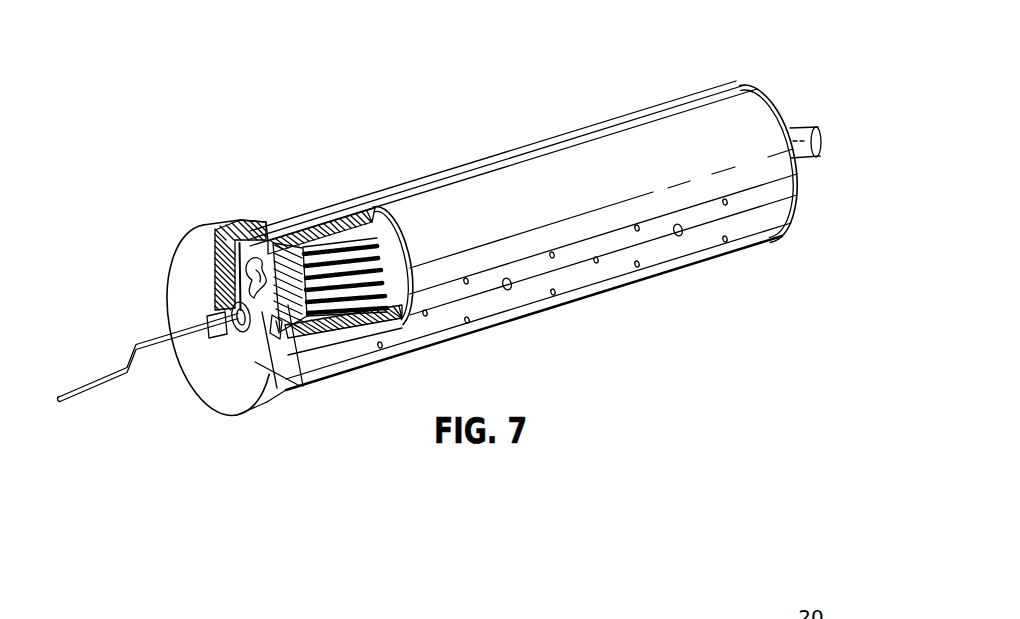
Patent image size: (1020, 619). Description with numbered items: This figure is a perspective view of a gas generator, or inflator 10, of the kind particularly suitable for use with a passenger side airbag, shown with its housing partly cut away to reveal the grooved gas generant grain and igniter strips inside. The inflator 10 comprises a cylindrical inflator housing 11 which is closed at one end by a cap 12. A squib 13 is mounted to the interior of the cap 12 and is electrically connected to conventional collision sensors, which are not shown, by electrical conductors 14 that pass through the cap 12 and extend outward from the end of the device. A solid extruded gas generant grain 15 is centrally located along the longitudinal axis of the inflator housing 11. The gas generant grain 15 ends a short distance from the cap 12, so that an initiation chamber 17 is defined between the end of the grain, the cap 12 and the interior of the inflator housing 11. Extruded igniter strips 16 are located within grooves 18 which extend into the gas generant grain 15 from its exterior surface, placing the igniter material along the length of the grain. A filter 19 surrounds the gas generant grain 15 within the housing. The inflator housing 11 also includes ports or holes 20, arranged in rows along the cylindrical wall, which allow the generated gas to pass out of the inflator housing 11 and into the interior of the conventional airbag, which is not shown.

The inflator 10 is at (638, 106).
The inflator housing 11 is at (443, 183).
The cap 12 is at (178, 298).
The squib 13 is at (223, 282).
The electrical conductors 14 is at (106, 394).
The gas generant grain 15 is at (320, 236).
The igniter strips 16 is at (273, 240).
The initiation chamber 17 is at (215, 400).
The grooves 18 is at (303, 380).
The filter 19 is at (378, 208).
The ports or holes 20 is at (690, 238).